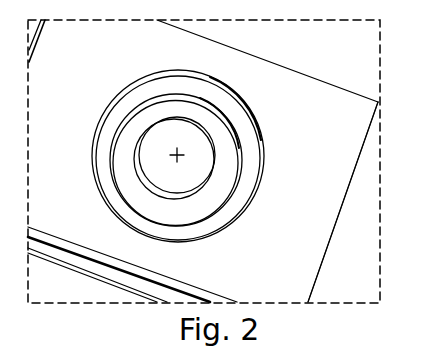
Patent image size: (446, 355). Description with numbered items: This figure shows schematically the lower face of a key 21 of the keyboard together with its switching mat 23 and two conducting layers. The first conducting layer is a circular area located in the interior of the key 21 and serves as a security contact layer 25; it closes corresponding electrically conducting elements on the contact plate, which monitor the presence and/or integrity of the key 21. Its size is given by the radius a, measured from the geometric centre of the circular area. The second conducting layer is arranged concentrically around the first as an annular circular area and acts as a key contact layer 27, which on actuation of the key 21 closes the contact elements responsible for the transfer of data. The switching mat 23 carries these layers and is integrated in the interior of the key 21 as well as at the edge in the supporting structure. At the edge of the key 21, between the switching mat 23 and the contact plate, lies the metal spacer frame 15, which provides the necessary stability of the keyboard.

The spacer frame 15 is at (311, 245).
The key 21 is at (356, 208).
The switching mat 23 is at (166, 112).
The security contact layer 25 is at (200, 152).
The key contact layer 27 is at (222, 212).
The radius of the security contact layer a is at (177, 155).